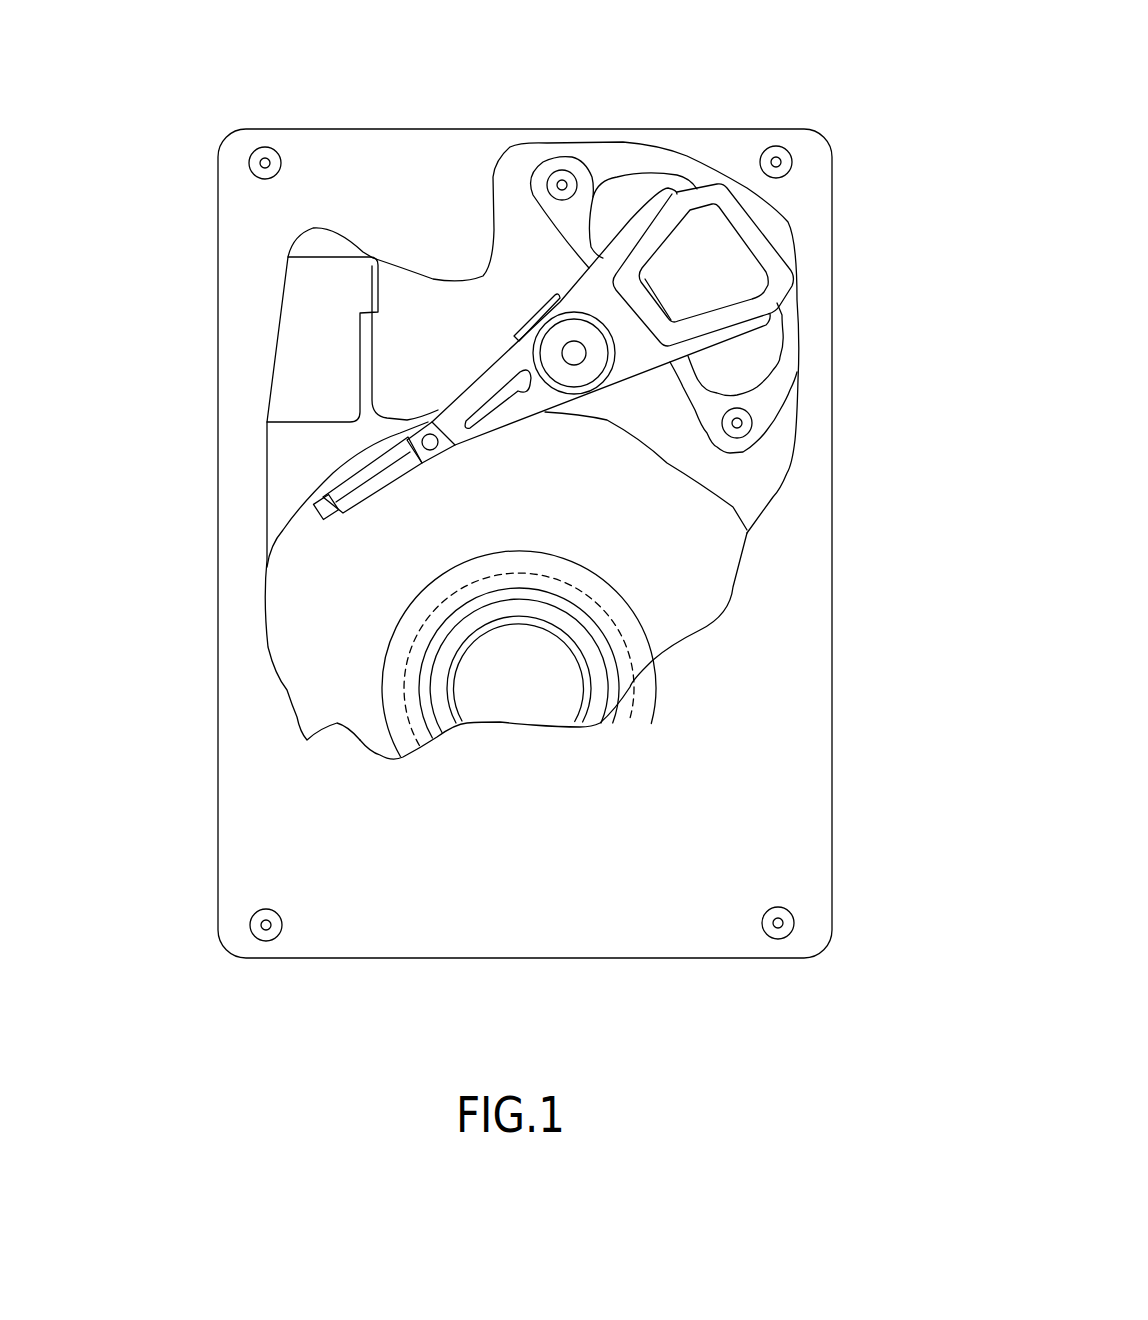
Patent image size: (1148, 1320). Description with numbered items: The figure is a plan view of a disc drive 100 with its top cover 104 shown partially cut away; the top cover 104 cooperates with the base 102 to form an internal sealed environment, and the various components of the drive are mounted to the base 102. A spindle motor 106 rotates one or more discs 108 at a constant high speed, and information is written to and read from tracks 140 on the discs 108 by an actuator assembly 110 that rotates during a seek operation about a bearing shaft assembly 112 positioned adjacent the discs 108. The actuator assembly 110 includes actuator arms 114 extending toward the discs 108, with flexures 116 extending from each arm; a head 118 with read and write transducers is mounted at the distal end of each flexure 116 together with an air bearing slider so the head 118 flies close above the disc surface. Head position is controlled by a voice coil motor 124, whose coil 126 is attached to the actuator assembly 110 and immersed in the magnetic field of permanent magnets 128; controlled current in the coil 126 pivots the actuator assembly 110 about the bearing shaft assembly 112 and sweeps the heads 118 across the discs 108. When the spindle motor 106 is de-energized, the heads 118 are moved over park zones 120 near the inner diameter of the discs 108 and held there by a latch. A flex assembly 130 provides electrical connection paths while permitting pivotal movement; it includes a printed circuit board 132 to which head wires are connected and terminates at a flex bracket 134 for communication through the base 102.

The disc drive 100 is at (235, 72).
The base 102 is at (286, 458).
The top cover 104 is at (283, 813).
The spindle motor 106 is at (515, 688).
The disc 108 is at (680, 610).
The actuator assembly 110 is at (640, 398).
The bearing shaft assembly 112 is at (577, 357).
The actuator arm 114 is at (503, 430).
The flexure 116 is at (357, 490).
The head 118 is at (318, 518).
The park zone 120 is at (403, 693).
The voice coil motor 124 is at (642, 190).
The coil 126 is at (777, 267).
The permanent magnet 128 is at (602, 212).
The flex assembly 130 is at (477, 363).
The printed circuit board 132 is at (537, 308).
The flex bracket 134 is at (307, 327).
The track 140 is at (603, 573).